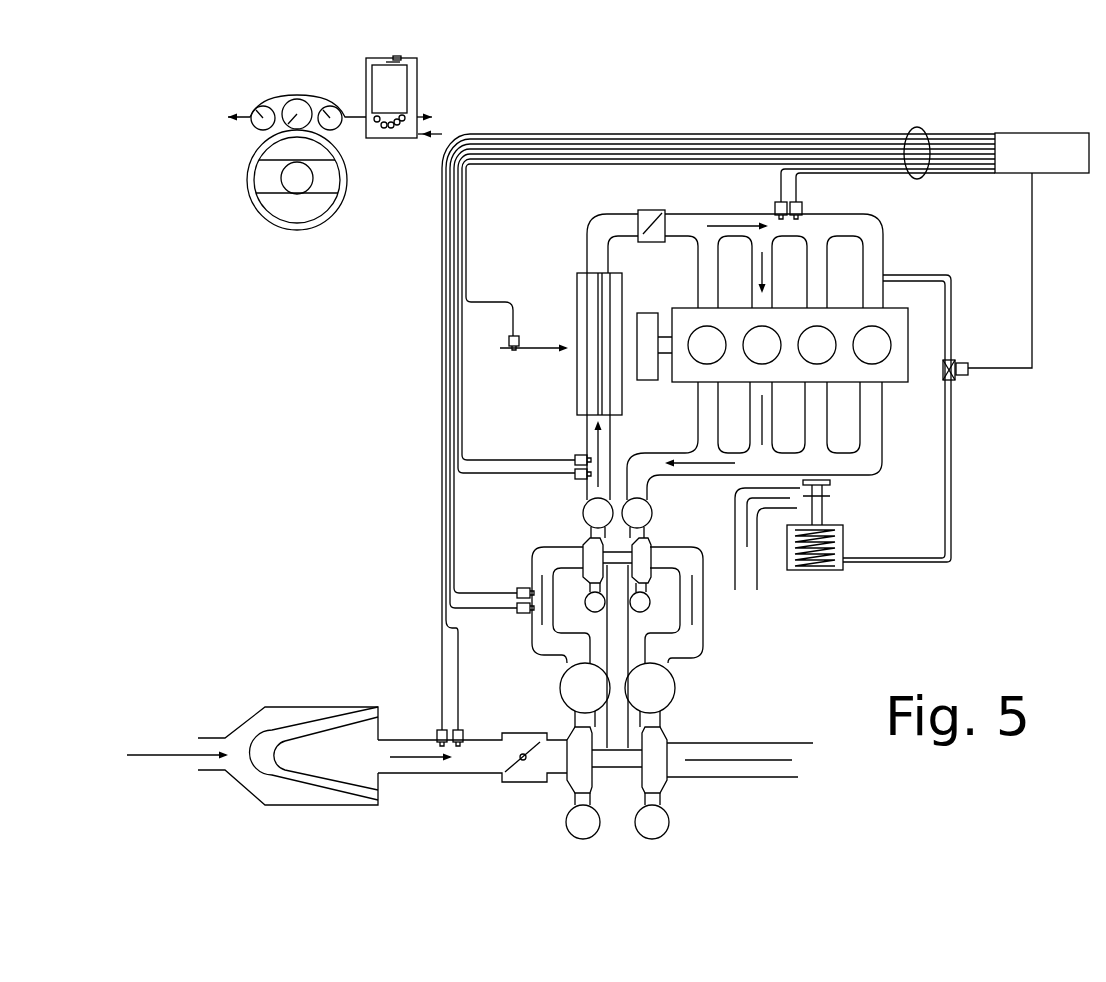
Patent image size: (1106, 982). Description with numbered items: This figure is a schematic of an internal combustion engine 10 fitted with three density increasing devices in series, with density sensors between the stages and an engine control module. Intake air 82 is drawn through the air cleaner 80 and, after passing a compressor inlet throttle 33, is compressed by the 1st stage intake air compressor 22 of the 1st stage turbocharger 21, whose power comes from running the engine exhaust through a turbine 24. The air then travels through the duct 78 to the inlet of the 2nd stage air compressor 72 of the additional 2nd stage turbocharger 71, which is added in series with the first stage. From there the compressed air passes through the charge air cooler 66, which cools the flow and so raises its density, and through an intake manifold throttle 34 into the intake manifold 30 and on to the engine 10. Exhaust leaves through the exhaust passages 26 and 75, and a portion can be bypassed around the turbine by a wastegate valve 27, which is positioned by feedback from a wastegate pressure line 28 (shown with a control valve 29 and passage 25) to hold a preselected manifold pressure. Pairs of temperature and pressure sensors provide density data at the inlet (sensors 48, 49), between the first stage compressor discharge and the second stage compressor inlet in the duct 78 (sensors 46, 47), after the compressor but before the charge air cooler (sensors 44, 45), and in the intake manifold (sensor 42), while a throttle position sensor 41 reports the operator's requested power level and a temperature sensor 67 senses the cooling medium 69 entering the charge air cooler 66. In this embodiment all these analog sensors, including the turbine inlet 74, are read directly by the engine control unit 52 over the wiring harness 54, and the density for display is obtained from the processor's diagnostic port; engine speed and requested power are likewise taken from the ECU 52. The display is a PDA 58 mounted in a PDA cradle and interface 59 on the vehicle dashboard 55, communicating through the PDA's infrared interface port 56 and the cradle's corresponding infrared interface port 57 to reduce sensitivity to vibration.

The internal combustion engine 10 is at (680, 385).
The 1st stage turbocharger 21 is at (621, 782).
The 1st stage intake air compressor 22 is at (592, 825).
The turbine 24 is at (656, 687).
The EGR passage 25 is at (752, 568).
The exhaust manifold 26 is at (645, 478).
The wastegate valve 27 is at (828, 572).
The wastegate pressure line 28 is at (952, 525).
The control valve 29 is at (962, 380).
The intake manifold 30 is at (865, 230).
The compressor inlet throttle 33 is at (515, 775).
The intake manifold throttle 34 is at (654, 232).
The throttle position sensor 41 is at (800, 202).
The intake manifold density sensor 42 is at (778, 203).
The post-compressor density sensor 44 is at (575, 458).
The post-compressor density sensor 45 is at (575, 476).
The interstage density sensor 46 is at (520, 590).
The interstage density sensor 47 is at (520, 613).
The inlet density sensor 48 is at (462, 731).
The inlet density sensor 49 is at (437, 731).
The engine control unit 52 is at (1043, 148).
The wiring harness 54 is at (922, 176).
The vehicle dashboard 55 is at (312, 103).
The PDA infrared interface port 56 is at (393, 60).
The cradle infrared interface port 57 is at (396, 55).
The PDA 58 is at (397, 75).
The PDA cradle and interface 59 is at (411, 139).
The charge air cooler 66 is at (575, 377).
The temperature sensor 67 is at (521, 342).
The cooling medium 69 is at (530, 351).
The 2nd stage turbocharger 71 is at (635, 609).
The 2nd stage air compressor 72 is at (592, 570).
The high pressure turbine inlet 74 is at (640, 518).
The exhaust pipe 75 is at (736, 745).
The duct 78 is at (560, 650).
The air cleaner 80 is at (305, 812).
The intake air 82 is at (165, 762).